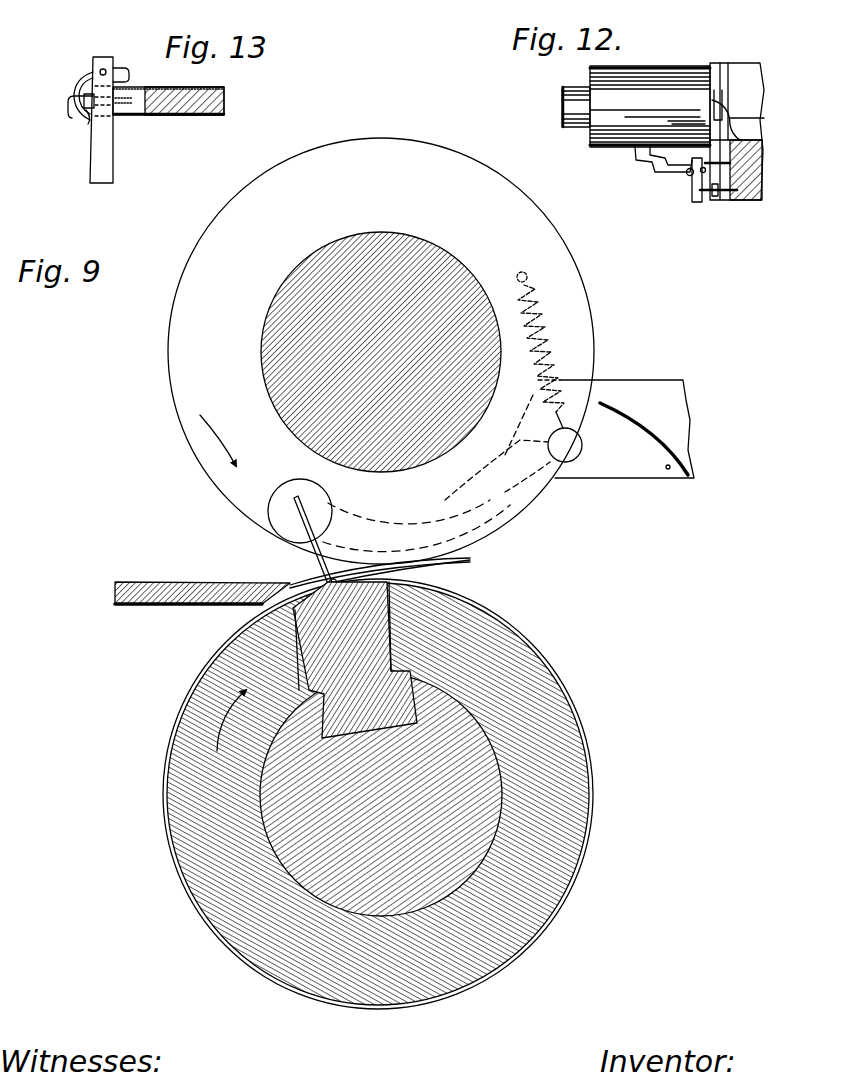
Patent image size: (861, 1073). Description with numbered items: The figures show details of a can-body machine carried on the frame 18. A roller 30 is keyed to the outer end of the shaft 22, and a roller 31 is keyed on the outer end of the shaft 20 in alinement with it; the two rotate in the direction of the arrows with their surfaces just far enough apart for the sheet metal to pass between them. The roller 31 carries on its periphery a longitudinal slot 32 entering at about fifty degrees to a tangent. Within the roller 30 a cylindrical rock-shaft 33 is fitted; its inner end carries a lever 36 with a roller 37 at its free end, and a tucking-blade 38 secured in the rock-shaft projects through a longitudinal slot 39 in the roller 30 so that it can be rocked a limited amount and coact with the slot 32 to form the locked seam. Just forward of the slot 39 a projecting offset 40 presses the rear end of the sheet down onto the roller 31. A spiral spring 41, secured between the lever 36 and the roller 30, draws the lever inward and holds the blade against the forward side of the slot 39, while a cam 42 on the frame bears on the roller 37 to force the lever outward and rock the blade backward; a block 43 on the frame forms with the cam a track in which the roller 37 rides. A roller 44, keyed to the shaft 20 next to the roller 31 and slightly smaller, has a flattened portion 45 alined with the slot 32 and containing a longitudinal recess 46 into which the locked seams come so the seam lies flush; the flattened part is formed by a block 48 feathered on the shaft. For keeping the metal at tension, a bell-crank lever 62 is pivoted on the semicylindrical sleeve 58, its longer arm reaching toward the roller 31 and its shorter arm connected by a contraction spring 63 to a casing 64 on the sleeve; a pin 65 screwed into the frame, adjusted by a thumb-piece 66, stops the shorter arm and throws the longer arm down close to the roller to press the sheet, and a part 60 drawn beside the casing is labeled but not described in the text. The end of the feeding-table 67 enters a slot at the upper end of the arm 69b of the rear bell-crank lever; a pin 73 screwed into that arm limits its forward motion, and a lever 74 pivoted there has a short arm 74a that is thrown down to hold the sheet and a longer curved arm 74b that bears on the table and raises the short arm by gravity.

In FIG. 12, the frame 18 is at (748, 200).
In FIG. 12, the shaft 20 is at (567, 125).
In FIG. 9, the shaft 20 is at (381, 795).
In FIG. 9, the shaft 22 is at (381, 352).
In FIG. 9, the roller 30 is at (381, 351).
In FIG. 12, the roller 31 is at (650, 106).
In FIG. 9, the roller 31 is at (290, 584).
In FIG. 9, the longitudinal slot 32 is at (355, 660).
In FIG. 9, the rock-shaft 33 is at (278, 512).
In FIG. 12, the lever 36 is at (718, 95).
In FIG. 9, the lever 36 is at (490, 508).
In FIG. 12, the roller 37 is at (720, 112).
In FIG. 9, the roller 37 is at (573, 462).
In FIG. 9, the tucking-blade 38 is at (329, 582).
In FIG. 9, the longitudinal slot 39 is at (300, 548).
In FIG. 9, the projecting offset 40 is at (362, 572).
In FIG. 12, the spiral spring 41 is at (683, 117).
In FIG. 9, the spiral spring 41 is at (547, 352).
In FIG. 9, the cam 42 is at (528, 452).
In FIG. 9, the block 43 is at (624, 455).
In FIG. 9, the roller 44 is at (510, 660).
In FIG. 9, the flattened portion 45 is at (400, 571).
In FIG. 9, the longitudinal recess 46 is at (295, 615).
In FIG. 9, the block 48 is at (405, 632).
In FIG. 12, the semicylindrical sleeve 58 is at (688, 176).
In FIG. 12, the bar 60 is at (735, 163).
In FIG. 12, the bell-crank lever 62 is at (655, 163).
In FIG. 12, the spring 63 is at (699, 202).
In FIG. 12, the casing 64 is at (730, 135).
In FIG. 12, the pin 65 is at (728, 195).
In FIG. 12, the thumb-piece 66 is at (715, 197).
In FIG. 13, the feeding-table 67 is at (176, 115).
In FIG. 13, the arm 69b is at (105, 160).
In FIG. 13, the pin 73 is at (80, 98).
In FIG. 13, the lever 74 is at (82, 82).
In FIG. 13, the short arm 74a is at (121, 68).
In FIG. 13, the curved arm 74b is at (84, 124).